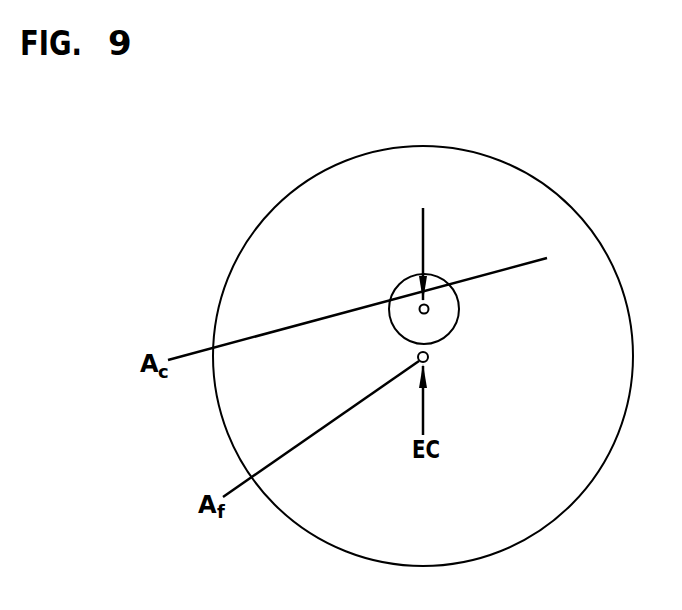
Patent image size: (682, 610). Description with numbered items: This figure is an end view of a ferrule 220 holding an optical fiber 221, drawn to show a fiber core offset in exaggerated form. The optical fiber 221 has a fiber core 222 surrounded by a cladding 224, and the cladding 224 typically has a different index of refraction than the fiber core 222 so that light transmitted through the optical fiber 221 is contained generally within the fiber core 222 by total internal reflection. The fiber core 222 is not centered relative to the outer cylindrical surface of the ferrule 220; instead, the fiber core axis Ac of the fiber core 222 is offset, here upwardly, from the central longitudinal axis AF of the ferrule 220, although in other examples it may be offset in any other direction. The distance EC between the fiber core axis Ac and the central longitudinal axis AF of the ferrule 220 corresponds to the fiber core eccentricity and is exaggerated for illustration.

The ferrule 220 is at (493, 153).
The optical fiber 221 is at (449, 282).
The fiber core 222 is at (421, 306).
The cladding 224 is at (376, 296).